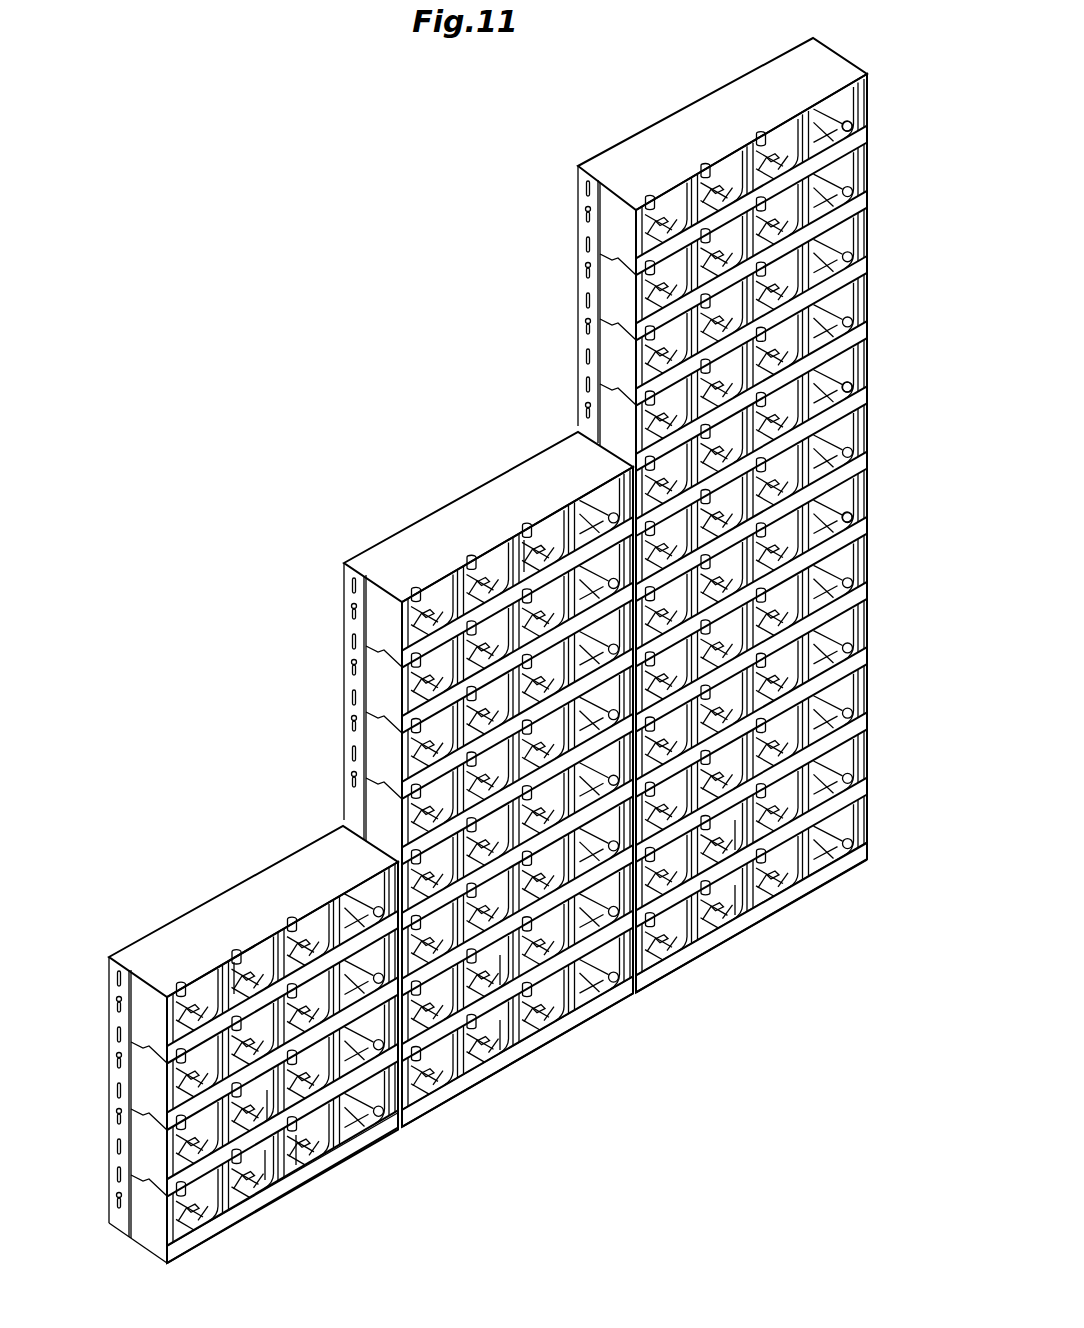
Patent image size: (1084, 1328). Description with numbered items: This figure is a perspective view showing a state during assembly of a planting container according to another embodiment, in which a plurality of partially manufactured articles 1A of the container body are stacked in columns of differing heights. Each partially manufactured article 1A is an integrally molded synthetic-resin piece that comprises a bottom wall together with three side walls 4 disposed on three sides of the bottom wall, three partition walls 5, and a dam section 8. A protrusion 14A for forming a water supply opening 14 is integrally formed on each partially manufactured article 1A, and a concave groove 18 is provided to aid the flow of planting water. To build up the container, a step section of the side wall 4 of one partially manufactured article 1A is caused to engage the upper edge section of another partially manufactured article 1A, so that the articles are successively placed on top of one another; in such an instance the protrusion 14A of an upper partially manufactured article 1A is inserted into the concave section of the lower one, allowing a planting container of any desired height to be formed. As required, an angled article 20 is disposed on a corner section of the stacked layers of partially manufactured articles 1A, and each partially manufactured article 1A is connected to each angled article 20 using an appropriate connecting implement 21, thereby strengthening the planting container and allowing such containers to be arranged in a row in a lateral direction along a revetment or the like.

The partially manufactured article 1A is at (877, 124).
The side wall 4 is at (682, 132).
The partition wall 5 is at (733, 836).
The dam section 8 is at (835, 872).
The water supply opening 14 is at (850, 132).
The protrusion 14A is at (852, 383).
The concave groove 18 is at (528, 542).
The angled article 20 is at (581, 204).
The connecting implement 21 is at (582, 218).